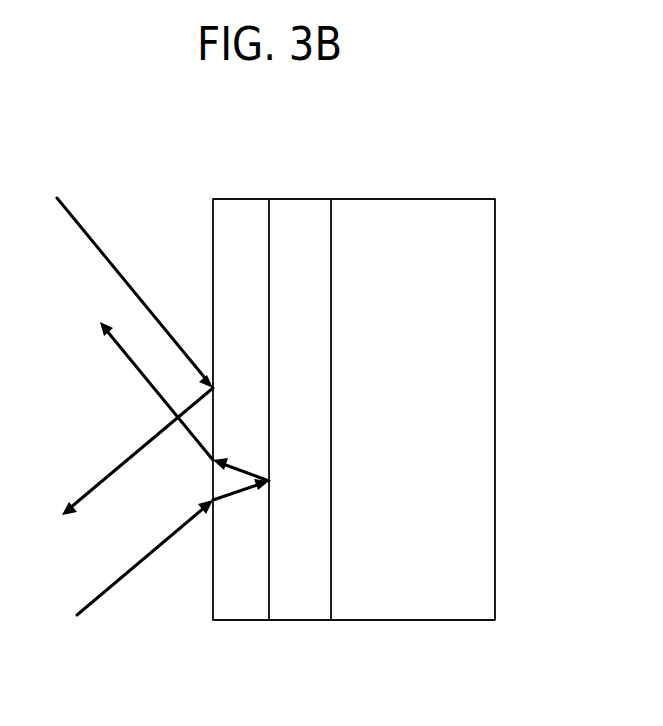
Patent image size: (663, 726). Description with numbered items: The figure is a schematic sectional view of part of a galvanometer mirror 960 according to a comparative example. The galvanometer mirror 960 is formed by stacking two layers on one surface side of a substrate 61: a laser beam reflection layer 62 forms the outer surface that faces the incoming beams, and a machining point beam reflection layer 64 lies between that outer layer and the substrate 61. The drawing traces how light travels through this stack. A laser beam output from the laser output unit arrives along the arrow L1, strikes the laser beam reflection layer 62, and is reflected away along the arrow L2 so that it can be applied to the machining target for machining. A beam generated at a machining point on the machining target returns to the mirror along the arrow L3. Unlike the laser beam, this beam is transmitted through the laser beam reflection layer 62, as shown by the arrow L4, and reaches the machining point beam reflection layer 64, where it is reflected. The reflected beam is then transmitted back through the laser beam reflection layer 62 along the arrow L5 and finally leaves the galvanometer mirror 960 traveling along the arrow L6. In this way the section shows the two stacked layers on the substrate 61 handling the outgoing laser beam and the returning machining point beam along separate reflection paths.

The galvanometer mirror 960 is at (314, 162).
The substrate 61 is at (410, 208).
The laser beam reflection layer 62 is at (242, 612).
The machining point beam reflection layer 64 is at (298, 612).
The arrow L1 is at (83, 233).
The arrow L2 is at (127, 455).
The arrow L3 is at (108, 588).
The arrow L4 is at (238, 498).
The arrow L5 is at (248, 468).
The arrow L6 is at (130, 363).